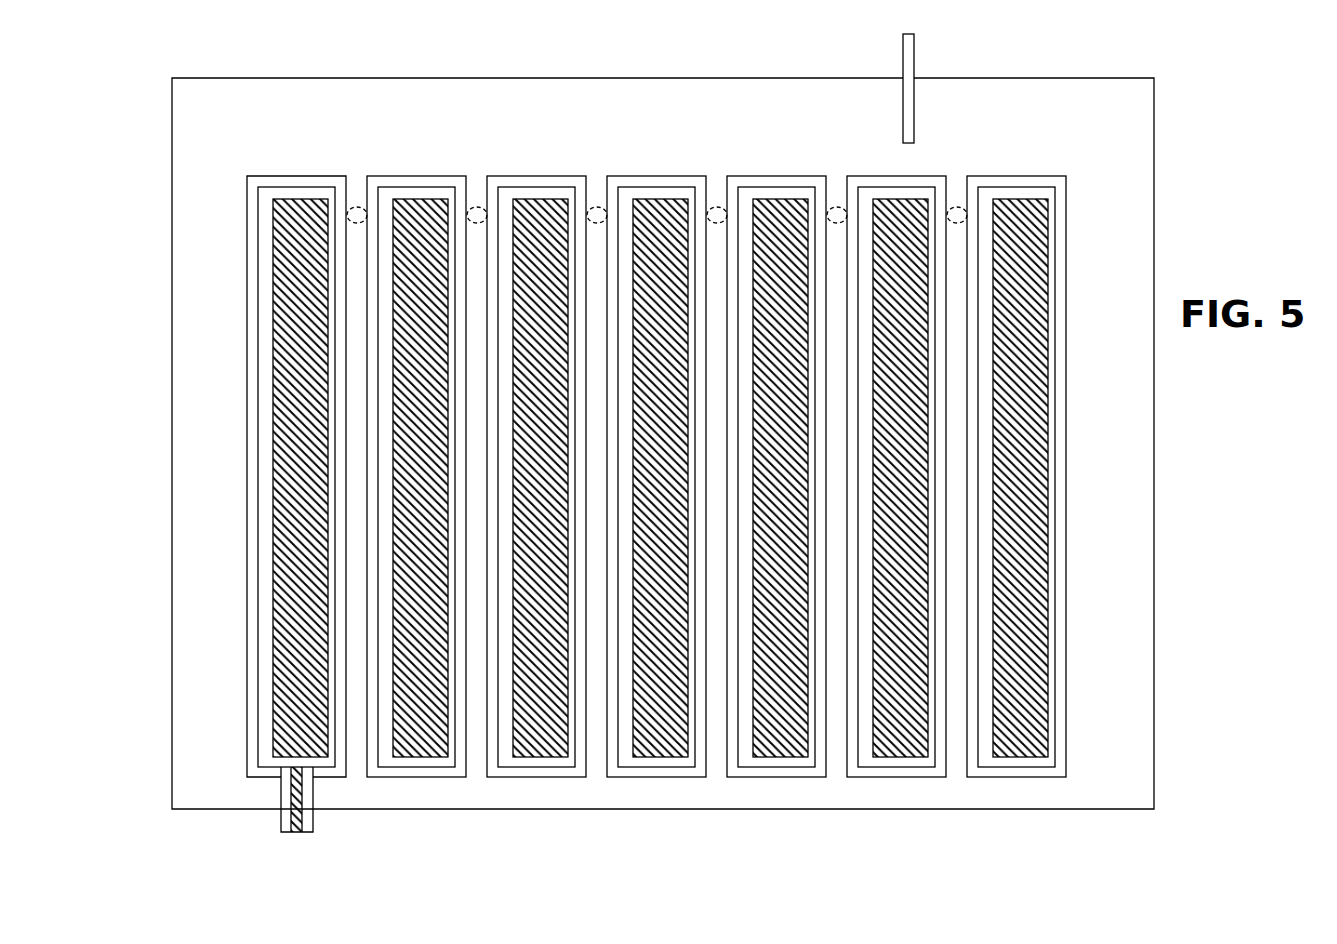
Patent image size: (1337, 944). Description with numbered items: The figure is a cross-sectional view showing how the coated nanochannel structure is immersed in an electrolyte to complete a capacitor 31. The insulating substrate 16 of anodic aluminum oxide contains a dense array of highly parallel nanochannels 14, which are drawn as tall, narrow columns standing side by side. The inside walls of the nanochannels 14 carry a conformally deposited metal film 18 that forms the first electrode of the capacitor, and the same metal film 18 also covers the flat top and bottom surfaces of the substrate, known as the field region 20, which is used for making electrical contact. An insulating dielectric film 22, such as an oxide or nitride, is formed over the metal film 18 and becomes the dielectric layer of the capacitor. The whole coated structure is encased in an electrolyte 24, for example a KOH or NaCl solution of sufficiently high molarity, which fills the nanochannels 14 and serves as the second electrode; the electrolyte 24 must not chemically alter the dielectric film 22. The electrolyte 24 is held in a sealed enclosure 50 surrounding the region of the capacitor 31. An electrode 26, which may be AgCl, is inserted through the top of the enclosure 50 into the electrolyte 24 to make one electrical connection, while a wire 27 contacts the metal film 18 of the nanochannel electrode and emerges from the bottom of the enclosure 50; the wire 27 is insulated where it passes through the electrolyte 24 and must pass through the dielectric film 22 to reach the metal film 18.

The nanochannels 14 is at (671, 432).
The insulating substrate 16 is at (392, 281).
The metal film 18 is at (258, 438).
The field region 20 is at (801, 802).
The dielectric film 22 is at (247, 483).
The electrolyte 24 is at (372, 153).
The electrode 26 is at (914, 89).
The wire 27 is at (290, 822).
The capacitor 31 is at (1134, 166).
The enclosure 50 is at (1164, 569).